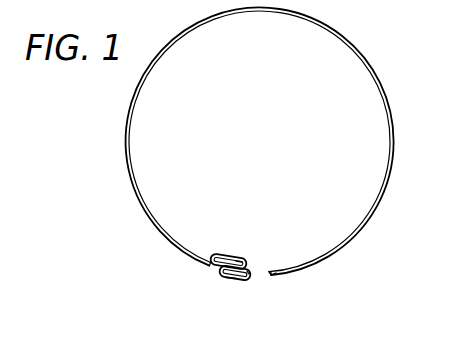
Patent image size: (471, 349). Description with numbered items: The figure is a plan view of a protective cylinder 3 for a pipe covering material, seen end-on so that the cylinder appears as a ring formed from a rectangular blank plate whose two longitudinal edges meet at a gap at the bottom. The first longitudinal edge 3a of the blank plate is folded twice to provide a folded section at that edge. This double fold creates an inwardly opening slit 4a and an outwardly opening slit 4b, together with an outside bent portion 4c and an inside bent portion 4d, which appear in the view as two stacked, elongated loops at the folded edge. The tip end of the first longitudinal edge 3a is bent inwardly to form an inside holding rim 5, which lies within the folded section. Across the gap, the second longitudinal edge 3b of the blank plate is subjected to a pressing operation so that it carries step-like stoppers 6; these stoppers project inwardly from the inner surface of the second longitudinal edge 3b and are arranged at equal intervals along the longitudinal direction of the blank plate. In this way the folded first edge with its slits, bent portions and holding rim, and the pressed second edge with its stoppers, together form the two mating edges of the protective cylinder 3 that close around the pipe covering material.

The protective cylinder 3 is at (128, 160).
The first longitudinal edge 3a is at (232, 277).
The second longitudinal edge 3b is at (282, 278).
The inwardly opening slit 4a is at (225, 273).
The outwardly opening slit 4b is at (217, 257).
The outside bent portion 4c is at (247, 273).
The inside bent portion 4d is at (213, 260).
The inside holding rim 5 is at (229, 263).
The step-like stopper 6 is at (273, 277).